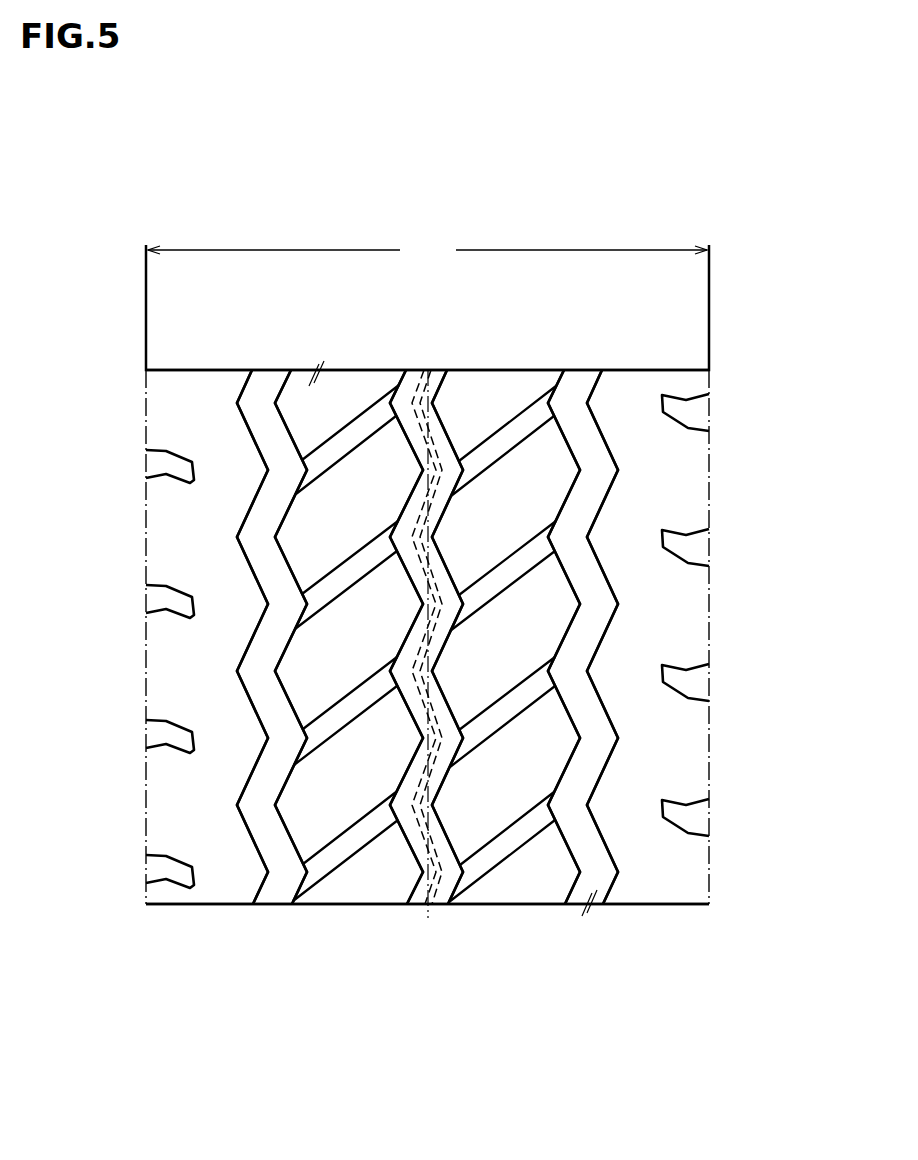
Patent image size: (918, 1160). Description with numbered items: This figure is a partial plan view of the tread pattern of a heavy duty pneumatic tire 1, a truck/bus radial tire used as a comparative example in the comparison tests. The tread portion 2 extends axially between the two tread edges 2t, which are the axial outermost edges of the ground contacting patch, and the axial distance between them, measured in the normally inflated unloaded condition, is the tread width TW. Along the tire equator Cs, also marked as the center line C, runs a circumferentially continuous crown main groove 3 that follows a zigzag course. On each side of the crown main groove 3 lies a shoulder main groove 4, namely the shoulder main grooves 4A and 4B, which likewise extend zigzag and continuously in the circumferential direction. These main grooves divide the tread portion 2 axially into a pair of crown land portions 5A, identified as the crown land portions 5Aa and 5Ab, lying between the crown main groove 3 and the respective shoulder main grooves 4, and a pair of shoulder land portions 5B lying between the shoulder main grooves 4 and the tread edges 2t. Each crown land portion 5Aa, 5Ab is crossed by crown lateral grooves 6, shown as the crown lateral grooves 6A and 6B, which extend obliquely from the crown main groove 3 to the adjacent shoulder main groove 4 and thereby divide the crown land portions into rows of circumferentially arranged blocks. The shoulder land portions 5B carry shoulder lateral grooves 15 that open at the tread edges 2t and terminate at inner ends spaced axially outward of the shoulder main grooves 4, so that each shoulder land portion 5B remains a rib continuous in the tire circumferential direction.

The heavy duty pneumatic tire 1 is at (722, 300).
The tread portion 2 is at (637, 408).
The tread edge 2t is at (712, 390).
The crown main groove 3 is at (402, 405).
The shoulder main groove 4 is at (421, 595).
The shoulder main groove 4A is at (567, 408).
The shoulder main groove 4B is at (270, 412).
The crown land portion 5A is at (438, 682).
The crown land portion 5Aa is at (552, 880).
The crown land portion 5Ab is at (365, 880).
The shoulder land portion 5B is at (210, 880).
The crown lateral groove 6 is at (427, 643).
The crown lateral groove 6A is at (522, 420).
The crown lateral groove 6B is at (337, 455).
The shoulder lateral groove 15 is at (688, 411).
The tire equator C is at (430, 624).
The tire equator Cs is at (428, 370).
The tread width TW is at (427, 250).